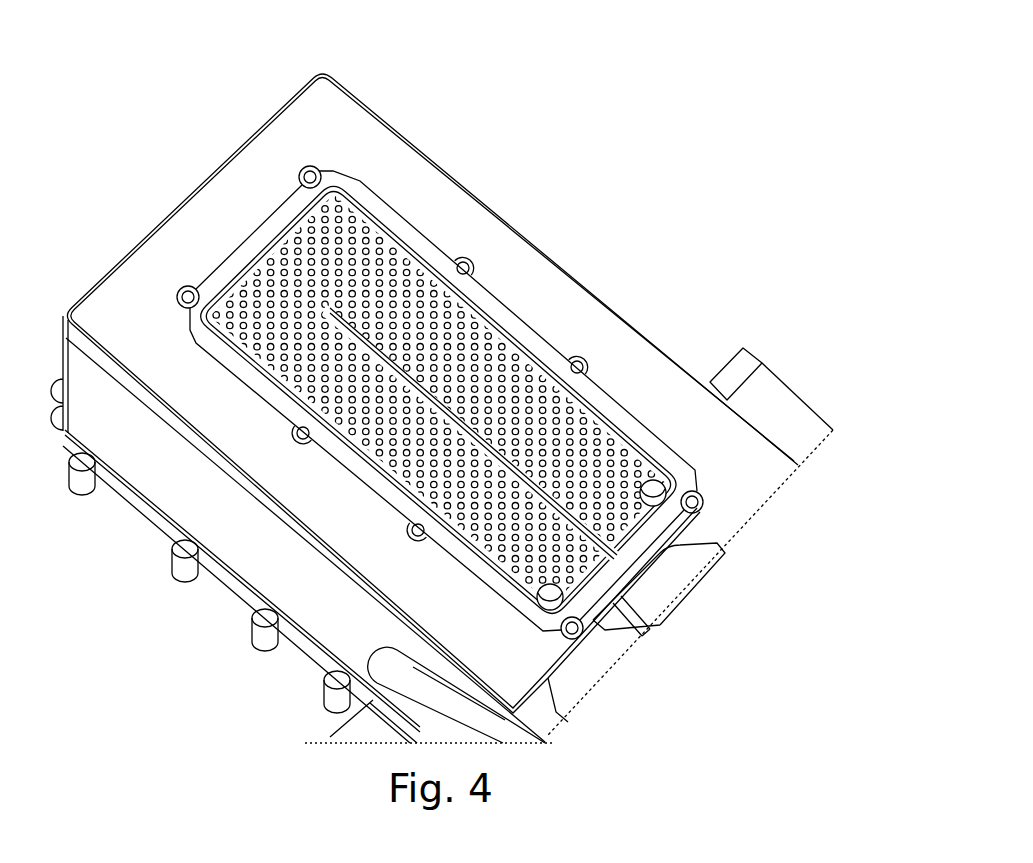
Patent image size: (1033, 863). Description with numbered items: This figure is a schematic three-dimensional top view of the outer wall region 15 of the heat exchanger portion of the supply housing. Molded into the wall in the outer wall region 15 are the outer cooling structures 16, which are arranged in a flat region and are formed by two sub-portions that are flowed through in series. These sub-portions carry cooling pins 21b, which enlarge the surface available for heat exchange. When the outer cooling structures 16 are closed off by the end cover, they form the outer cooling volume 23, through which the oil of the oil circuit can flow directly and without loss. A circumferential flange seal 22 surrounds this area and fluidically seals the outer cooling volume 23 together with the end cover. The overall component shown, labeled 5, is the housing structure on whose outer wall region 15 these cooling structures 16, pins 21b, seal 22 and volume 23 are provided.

The housing cover 5 is at (465, 217).
The outer wall region 15 is at (590, 336).
The outer cooling structures 16 is at (265, 251).
The cooling pins 21b is at (390, 399).
The circumferential flange seal 22 is at (331, 172).
The outer cooling volume 23 is at (178, 311).